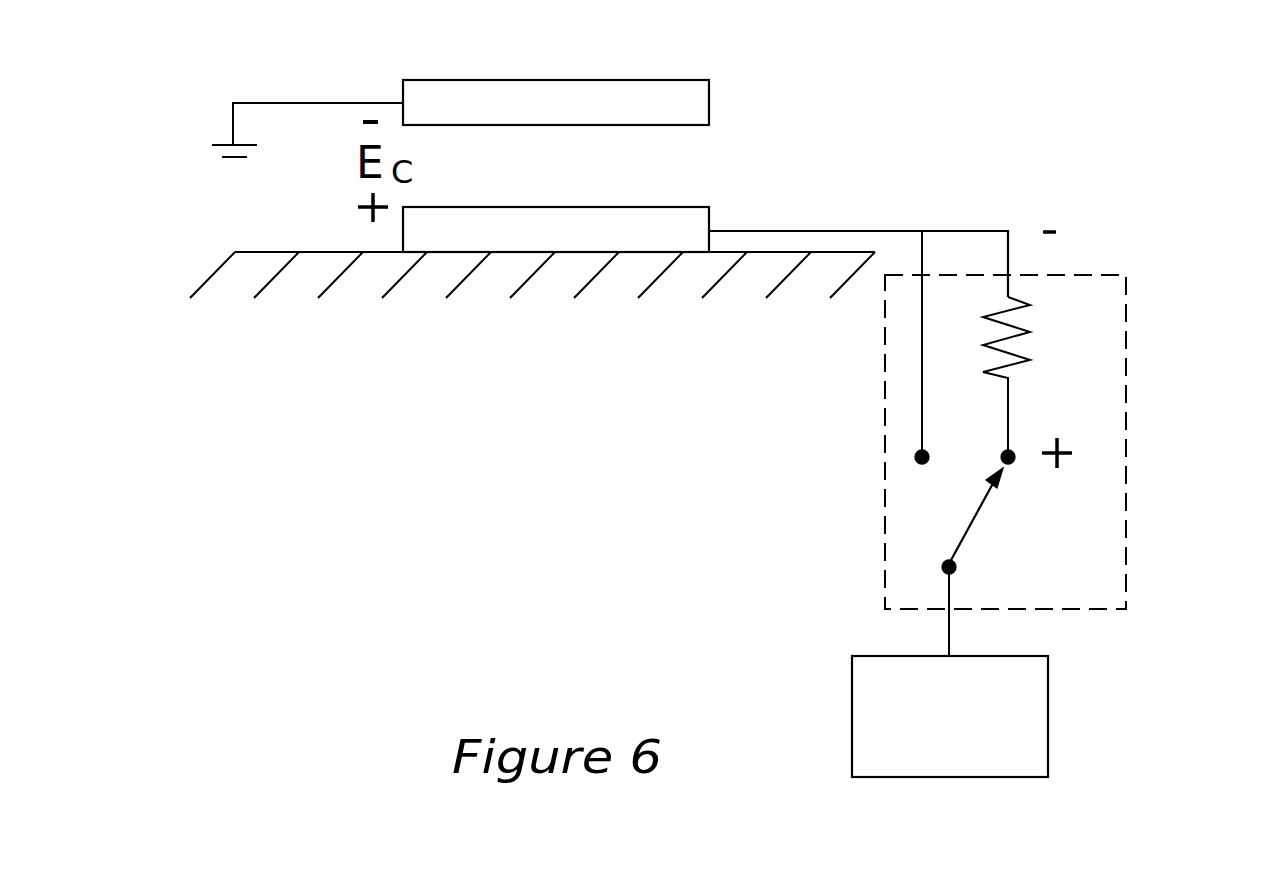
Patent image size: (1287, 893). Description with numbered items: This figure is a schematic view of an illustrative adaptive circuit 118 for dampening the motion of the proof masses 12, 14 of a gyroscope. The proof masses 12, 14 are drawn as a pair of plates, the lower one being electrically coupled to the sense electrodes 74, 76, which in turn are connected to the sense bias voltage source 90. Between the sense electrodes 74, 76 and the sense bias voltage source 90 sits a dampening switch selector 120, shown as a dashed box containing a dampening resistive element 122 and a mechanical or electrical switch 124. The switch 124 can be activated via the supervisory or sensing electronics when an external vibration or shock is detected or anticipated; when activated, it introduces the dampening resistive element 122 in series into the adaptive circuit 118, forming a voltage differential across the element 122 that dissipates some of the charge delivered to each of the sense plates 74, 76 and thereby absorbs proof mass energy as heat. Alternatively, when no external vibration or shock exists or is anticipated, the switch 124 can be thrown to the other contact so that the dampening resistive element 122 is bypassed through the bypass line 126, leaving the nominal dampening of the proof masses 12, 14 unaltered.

The proof mass 12 is at (500, 77).
The proof mass 14 is at (418, 90).
The sense electrode 74 is at (556, 278).
The sense electrode 76 is at (585, 234).
The sense bias voltage source 90 is at (1048, 716).
The adaptive circuit 118 is at (1122, 233).
The dampening switch selector 120 is at (1126, 440).
The dampening resistive element 122 is at (1030, 300).
The switch 124 is at (1008, 532).
The bypass line 126 is at (922, 404).